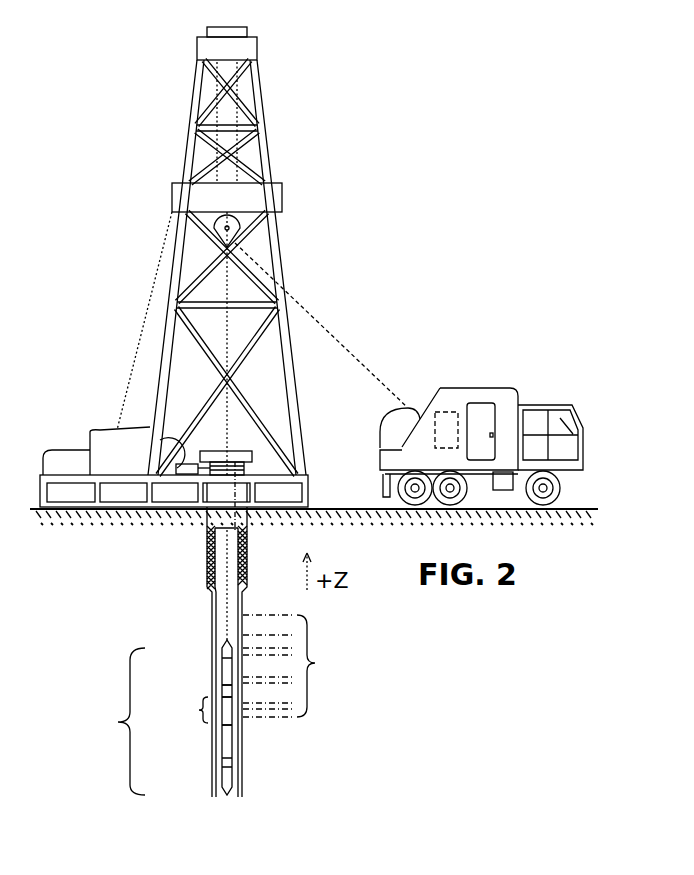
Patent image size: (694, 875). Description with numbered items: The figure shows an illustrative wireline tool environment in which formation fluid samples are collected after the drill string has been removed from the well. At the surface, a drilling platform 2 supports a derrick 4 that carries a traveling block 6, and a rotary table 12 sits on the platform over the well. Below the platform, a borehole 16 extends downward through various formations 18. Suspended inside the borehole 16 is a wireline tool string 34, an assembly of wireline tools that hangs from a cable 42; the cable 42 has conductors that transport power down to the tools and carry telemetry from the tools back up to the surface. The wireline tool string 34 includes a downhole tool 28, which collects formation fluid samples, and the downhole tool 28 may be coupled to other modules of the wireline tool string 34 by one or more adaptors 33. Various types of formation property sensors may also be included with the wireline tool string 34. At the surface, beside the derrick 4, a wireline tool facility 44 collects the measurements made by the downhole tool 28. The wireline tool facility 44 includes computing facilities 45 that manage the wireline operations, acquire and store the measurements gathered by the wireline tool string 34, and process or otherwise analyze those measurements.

The drilling platform 2 is at (308, 487).
The derrick 4 is at (297, 438).
The traveling block 6 is at (240, 229).
The rotary table 12 is at (243, 450).
The borehole 16 is at (213, 626).
The formations 18 is at (297, 666).
The downhole tool 28 is at (185, 711).
The adaptors 33 is at (232, 690).
The wireline tool string 34 is at (116, 721).
The cable 42 is at (295, 305).
The wireline tool facility 44 is at (512, 388).
The computing facilities 45 is at (441, 388).